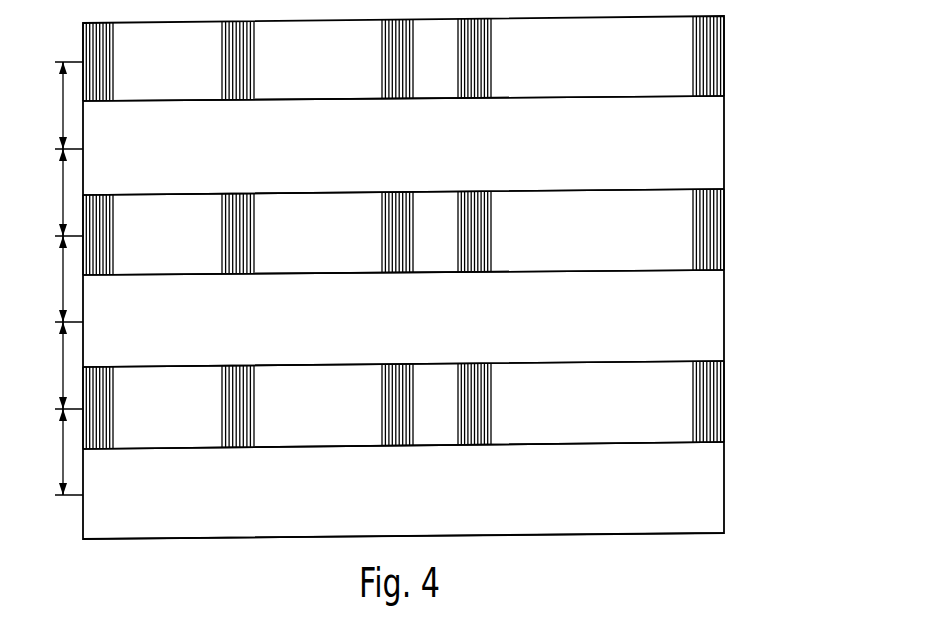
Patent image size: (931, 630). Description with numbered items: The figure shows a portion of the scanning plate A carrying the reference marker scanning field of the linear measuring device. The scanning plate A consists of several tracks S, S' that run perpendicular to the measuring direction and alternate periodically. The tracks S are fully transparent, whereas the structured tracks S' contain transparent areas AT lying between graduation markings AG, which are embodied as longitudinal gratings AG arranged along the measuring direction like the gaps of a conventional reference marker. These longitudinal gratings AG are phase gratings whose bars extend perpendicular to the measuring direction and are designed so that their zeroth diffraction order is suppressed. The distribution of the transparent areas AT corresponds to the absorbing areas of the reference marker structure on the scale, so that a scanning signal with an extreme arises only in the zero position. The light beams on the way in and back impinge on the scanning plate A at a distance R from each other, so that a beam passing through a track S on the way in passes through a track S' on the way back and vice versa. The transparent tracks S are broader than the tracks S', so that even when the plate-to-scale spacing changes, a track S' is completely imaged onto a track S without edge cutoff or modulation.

The scanning plate A is at (724, 163).
The transparent track S is at (442, 317).
The structured track S' is at (446, 243).
The distance between impingement points R is at (59, 278).
The longitudinal grating AG is at (97, 102).
The transparent area AT is at (163, 380).